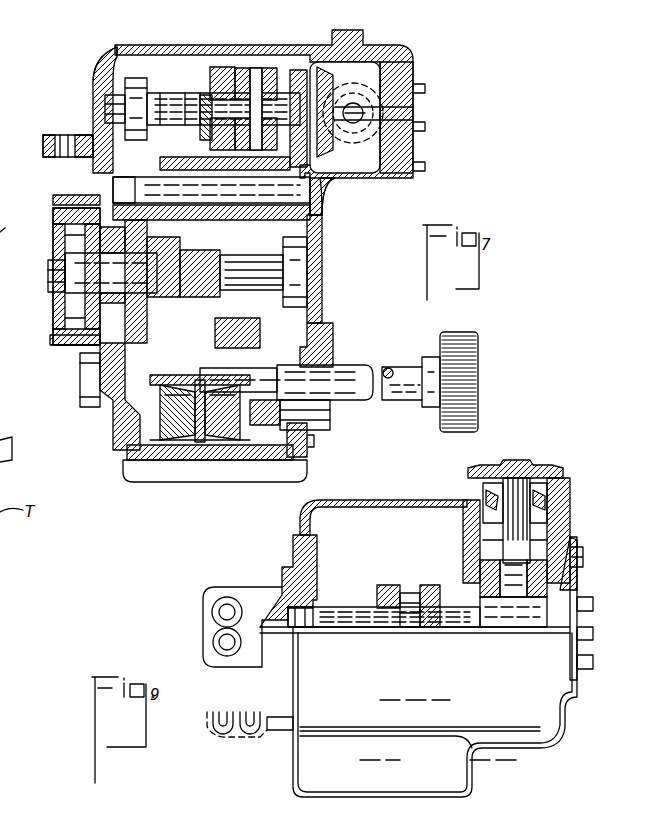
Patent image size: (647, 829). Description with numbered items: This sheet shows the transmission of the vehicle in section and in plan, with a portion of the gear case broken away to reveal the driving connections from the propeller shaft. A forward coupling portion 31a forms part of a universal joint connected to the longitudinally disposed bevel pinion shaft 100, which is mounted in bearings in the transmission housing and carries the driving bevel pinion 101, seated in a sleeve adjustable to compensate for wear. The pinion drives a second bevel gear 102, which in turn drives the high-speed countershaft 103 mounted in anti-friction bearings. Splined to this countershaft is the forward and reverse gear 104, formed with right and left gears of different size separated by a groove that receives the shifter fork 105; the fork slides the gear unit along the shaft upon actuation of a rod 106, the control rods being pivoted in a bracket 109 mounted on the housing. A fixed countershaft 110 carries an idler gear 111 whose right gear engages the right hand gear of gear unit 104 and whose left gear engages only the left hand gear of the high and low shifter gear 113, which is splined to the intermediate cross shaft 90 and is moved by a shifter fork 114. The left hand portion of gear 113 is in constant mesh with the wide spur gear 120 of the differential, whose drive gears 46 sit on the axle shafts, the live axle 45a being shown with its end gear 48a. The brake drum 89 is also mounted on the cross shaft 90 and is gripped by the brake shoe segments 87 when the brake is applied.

In FIG. 7, the bevel pinion shaft 100 is at (413, 63).
In FIG. 9, the bevel pinion shaft 100 is at (567, 518).
In FIG. 9, the driving bevel pinion 101 is at (577, 590).
In FIG. 7, the second bevel gear 102 is at (327, 147).
In FIG. 9, the second bevel gear 102 is at (487, 633).
In FIG. 7, the high-speed countershaft 103 is at (168, 100).
In FIG. 9, the high-speed countershaft 103 is at (343, 607).
In FIG. 7, the forward and reverse gear 104 is at (222, 68).
In FIG. 9, the forward and reverse gear 104 is at (388, 585).
In FIG. 7, the shifter fork 105 is at (250, 68).
In FIG. 9, the shifter fork 105 is at (408, 587).
In FIG. 9, the rod 106 is at (260, 737).
In FIG. 7, the bracket 109 is at (83, 130).
In FIG. 9, the bracket 109 is at (240, 587).
In FIG. 7, the fixed countershaft 110 is at (325, 197).
In FIG. 7, the idler gear 111 is at (193, 167).
In FIG. 7, the high and low shifter gear 113 is at (210, 240).
In FIG. 7, the shifter fork 114 is at (300, 223).
In FIG. 7, the wide spur gear 120 is at (203, 440).
In FIG. 7, the brake shoe segments 87 is at (72, 195).
In FIG. 7, the brake drum 89 is at (58, 233).
In FIG. 7, the intermediate cross shaft 90 is at (62, 295).
In FIG. 7, the bevel gears 46 is at (233, 338).
In FIG. 7, the live axle 45a is at (348, 370).
In FIG. 7, the gear 48a is at (462, 332).
In FIG. 9, the forward coupling portion 31a is at (563, 473).